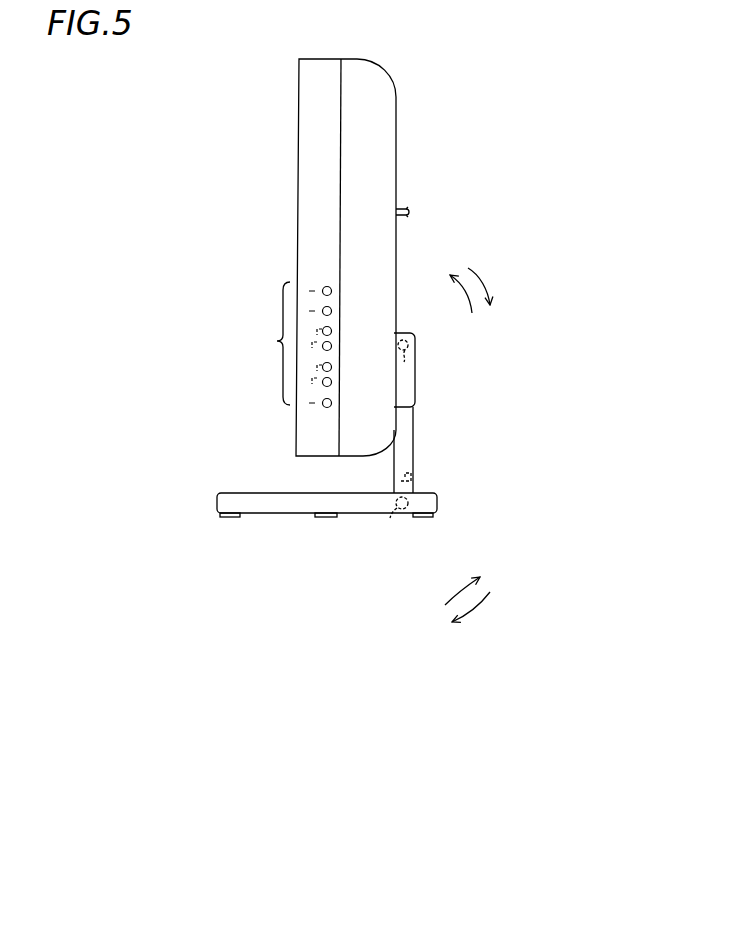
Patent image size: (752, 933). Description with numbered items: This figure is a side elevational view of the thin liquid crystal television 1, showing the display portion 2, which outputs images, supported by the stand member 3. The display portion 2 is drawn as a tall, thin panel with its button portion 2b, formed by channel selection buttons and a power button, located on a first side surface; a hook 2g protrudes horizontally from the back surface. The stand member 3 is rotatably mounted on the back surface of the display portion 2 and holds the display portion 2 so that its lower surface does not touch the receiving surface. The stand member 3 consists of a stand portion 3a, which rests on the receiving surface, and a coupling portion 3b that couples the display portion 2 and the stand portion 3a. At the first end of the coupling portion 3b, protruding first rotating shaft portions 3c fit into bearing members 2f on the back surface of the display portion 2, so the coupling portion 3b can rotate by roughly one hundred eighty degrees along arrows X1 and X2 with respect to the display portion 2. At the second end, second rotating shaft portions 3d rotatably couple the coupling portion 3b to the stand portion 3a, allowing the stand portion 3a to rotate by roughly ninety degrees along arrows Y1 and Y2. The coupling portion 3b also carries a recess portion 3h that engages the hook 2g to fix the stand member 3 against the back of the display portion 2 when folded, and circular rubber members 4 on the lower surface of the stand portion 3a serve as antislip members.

The thin liquid crystal television 1 is at (588, 88).
The display portion 2 is at (308, 83).
The button portion 2b is at (275, 341).
The hook 2g is at (410, 211).
The bearing members 2f is at (408, 388).
The stand member 3 is at (310, 461).
The stand portion 3a is at (223, 502).
The coupling portion 3b is at (409, 430).
The first rotating shaft portions 3c is at (408, 367).
The recess portion 3h is at (412, 462).
The second rotating shaft portions 3d is at (396, 509).
The circular rubber members 4 is at (428, 518).
The arrow X1 is at (464, 307).
The arrow X2 is at (487, 298).
The arrow Y1 is at (447, 594).
The arrow Y2 is at (456, 613).